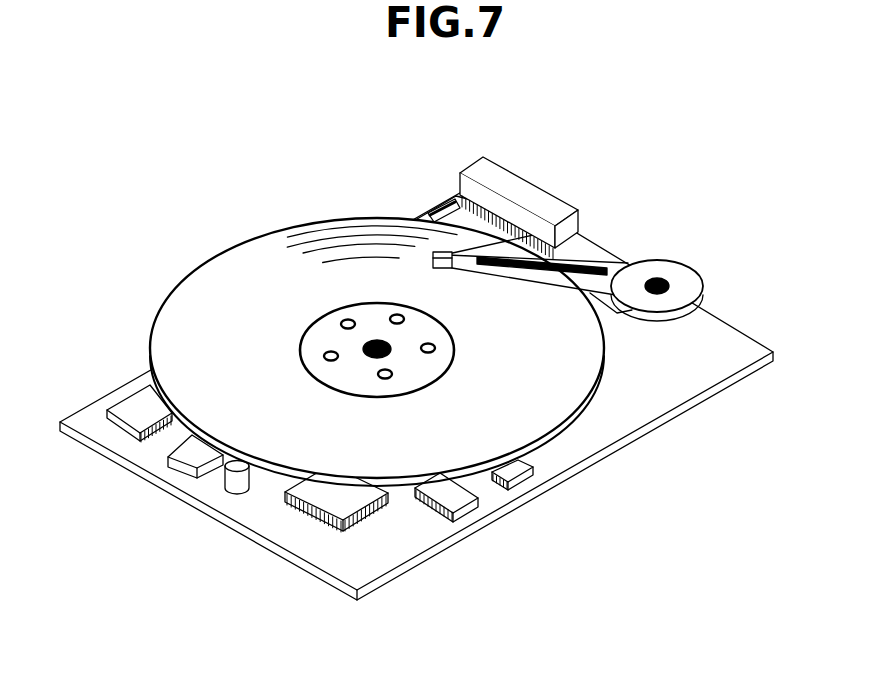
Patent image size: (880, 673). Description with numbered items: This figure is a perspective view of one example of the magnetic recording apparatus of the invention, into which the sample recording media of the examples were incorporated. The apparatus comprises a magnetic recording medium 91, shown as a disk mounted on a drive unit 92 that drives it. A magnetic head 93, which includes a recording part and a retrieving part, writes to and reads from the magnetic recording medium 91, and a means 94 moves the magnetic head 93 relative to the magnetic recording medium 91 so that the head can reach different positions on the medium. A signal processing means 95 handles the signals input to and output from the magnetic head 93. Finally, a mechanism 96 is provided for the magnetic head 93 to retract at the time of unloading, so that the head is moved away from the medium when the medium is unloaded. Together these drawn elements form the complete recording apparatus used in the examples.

The magnetic recording medium 91 is at (207, 320).
The drive unit 92 is at (330, 322).
The magnetic head 93 is at (578, 212).
The means to move the magnetic head 94 is at (667, 268).
The signal processing means 95 is at (460, 493).
The mechanism for the magnetic head to retract 96 is at (432, 204).